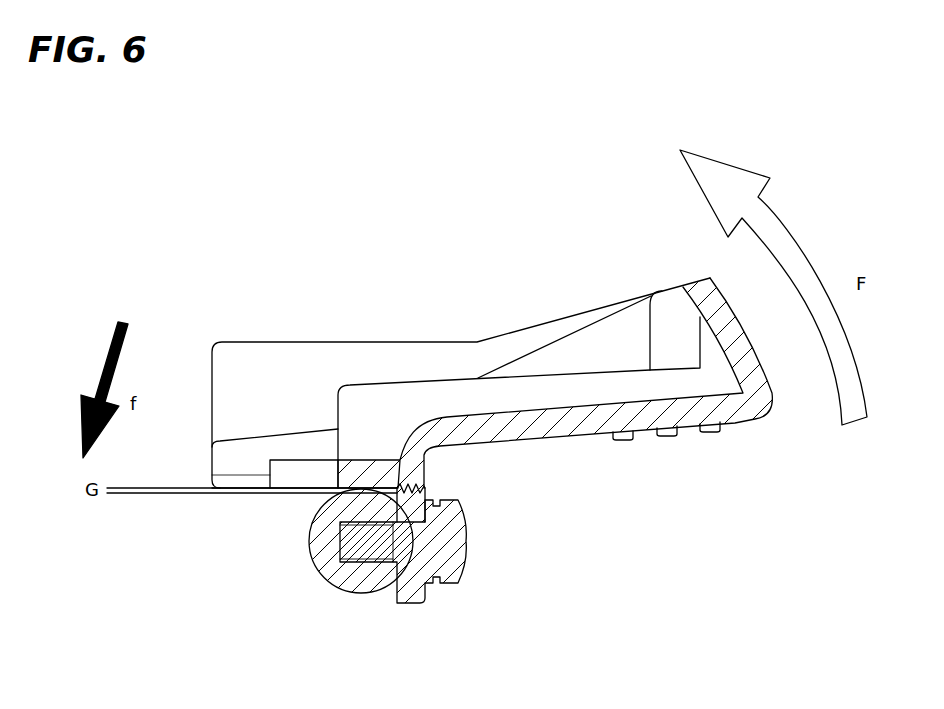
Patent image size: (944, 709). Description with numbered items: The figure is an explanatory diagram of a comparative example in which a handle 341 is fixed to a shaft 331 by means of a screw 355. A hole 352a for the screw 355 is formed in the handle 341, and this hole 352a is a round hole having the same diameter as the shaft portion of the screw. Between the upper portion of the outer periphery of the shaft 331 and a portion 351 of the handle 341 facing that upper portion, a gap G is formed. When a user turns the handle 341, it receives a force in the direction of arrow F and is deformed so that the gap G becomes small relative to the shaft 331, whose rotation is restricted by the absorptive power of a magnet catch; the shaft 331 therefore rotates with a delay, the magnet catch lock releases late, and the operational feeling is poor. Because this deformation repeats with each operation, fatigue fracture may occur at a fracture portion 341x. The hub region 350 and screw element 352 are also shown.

The shaft 331 is at (325, 567).
The handle 341 is at (743, 420).
The fracture portion 341x is at (338, 498).
The hub assembly 350 is at (400, 553).
The portion of the handle 351 is at (360, 483).
The screw 352 is at (420, 594).
The hole 352a is at (427, 491).
The screw 355 is at (438, 504).